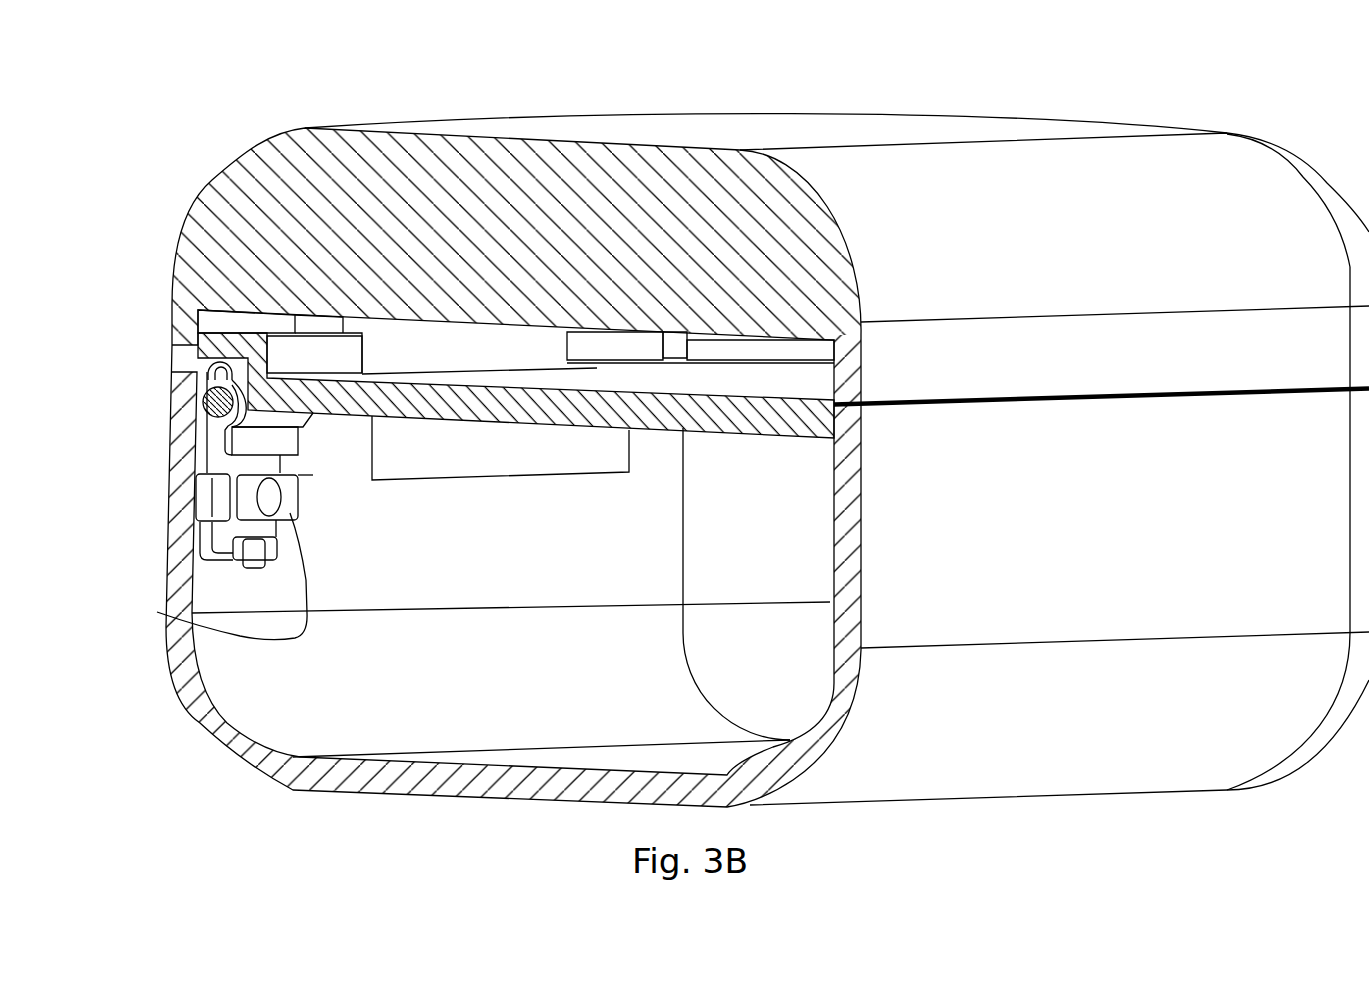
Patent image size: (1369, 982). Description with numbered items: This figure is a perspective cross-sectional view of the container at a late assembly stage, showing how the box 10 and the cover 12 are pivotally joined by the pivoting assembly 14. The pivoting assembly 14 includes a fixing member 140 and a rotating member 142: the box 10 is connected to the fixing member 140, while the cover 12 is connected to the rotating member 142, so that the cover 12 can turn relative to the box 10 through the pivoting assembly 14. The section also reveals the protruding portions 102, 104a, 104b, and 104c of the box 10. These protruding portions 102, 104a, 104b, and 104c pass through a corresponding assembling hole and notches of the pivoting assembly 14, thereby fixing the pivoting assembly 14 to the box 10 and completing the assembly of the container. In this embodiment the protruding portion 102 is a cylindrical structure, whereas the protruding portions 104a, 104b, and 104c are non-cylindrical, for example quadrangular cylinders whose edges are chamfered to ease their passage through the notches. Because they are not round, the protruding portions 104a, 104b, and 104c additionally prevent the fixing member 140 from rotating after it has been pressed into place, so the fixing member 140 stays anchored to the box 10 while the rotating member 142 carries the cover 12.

The box 10 is at (454, 788).
The cover 12 is at (683, 140).
The pivoting assembly 14 is at (424, 391).
The fixing member 140 is at (218, 438).
The rotating member 142 is at (212, 398).
The protruding portion 102 is at (248, 510).
The protruding portion 104a is at (216, 498).
The protruding portion 104b is at (254, 553).
The protruding portion 104c is at (157, 612).